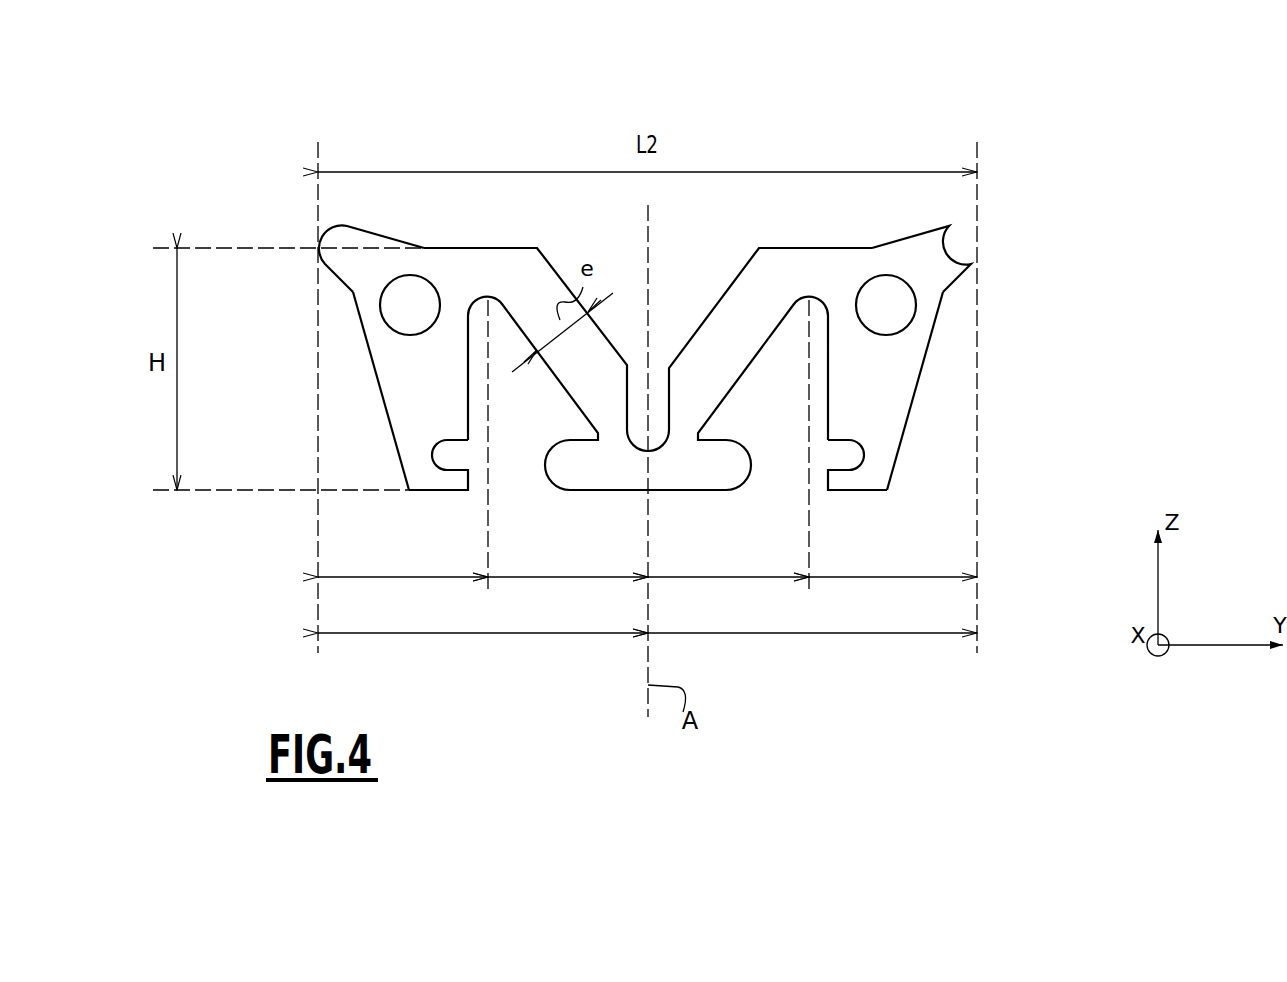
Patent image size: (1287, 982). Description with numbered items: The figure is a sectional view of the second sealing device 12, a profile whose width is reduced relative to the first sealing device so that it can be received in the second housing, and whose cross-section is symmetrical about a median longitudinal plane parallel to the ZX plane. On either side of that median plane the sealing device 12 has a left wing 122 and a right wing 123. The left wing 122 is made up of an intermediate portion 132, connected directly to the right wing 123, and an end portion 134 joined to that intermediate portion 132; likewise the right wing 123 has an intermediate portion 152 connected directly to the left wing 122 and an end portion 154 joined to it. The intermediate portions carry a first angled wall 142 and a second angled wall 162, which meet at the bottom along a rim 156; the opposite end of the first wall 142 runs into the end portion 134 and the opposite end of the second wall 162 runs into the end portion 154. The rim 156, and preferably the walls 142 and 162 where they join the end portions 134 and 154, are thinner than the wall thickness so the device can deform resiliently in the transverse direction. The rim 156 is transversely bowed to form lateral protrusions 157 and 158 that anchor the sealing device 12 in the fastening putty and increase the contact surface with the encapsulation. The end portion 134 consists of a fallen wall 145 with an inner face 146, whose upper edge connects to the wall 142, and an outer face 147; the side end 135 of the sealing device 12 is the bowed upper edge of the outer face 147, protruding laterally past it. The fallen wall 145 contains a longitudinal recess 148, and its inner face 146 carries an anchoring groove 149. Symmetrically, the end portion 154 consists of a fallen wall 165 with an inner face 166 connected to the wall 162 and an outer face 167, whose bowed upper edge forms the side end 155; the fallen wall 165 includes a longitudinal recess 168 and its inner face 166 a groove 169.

The second sealing device 12 is at (838, 133).
The left wing 122 is at (460, 635).
The right wing 123 is at (860, 635).
The intermediate portion 132 is at (597, 582).
The end portion 134 is at (397, 580).
The side end 135 is at (318, 257).
The first angled wall 142 is at (537, 282).
The fallen wall 145 is at (427, 395).
The inner face 146 is at (470, 397).
The outer face 147 is at (371, 357).
The longitudinal recess 148 is at (436, 283).
The anchoring groove 149 is at (438, 490).
The intermediate portion 152 is at (762, 580).
The end portion 154 is at (885, 578).
The side end 155 is at (980, 252).
The rim 156 is at (640, 477).
The lateral protrusion 157 is at (587, 470).
The lateral protrusion 158 is at (687, 470).
The second angled wall 162 is at (728, 320).
The fallen wall 165 is at (870, 387).
The inner face 166 is at (828, 375).
The outer face 167 is at (903, 447).
The longitudinal recess 168 is at (910, 332).
The groove 169 is at (830, 457).